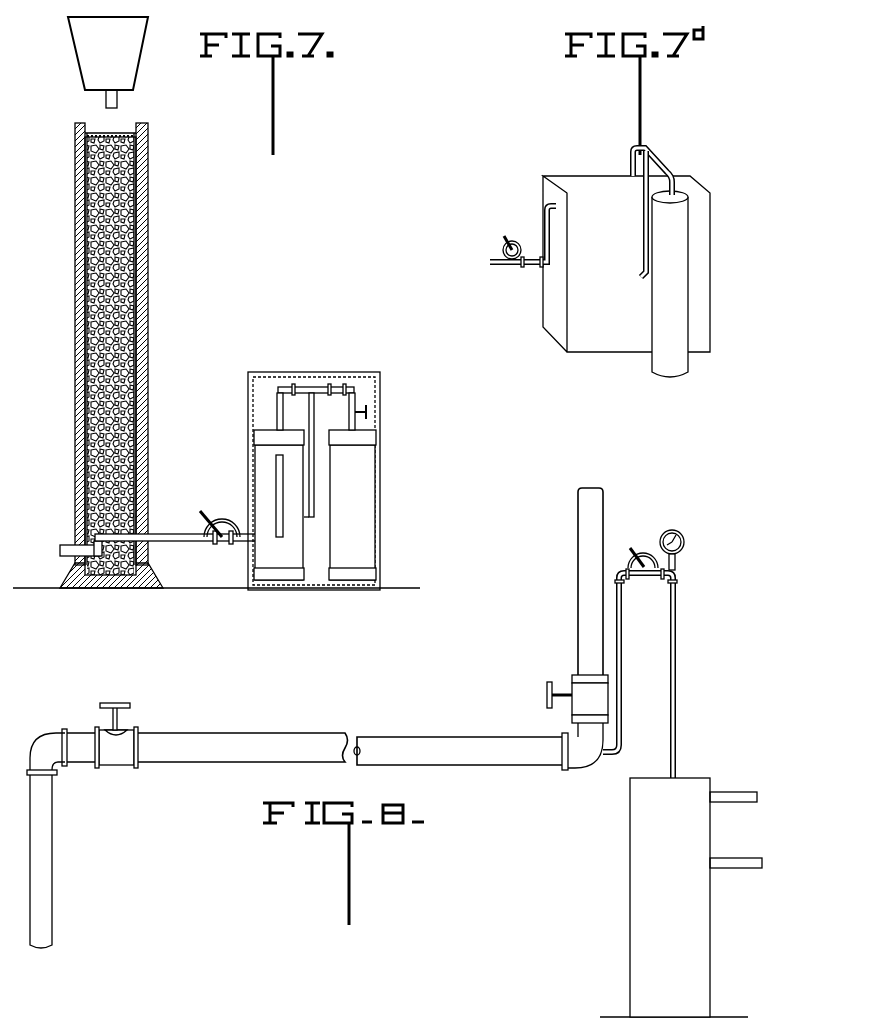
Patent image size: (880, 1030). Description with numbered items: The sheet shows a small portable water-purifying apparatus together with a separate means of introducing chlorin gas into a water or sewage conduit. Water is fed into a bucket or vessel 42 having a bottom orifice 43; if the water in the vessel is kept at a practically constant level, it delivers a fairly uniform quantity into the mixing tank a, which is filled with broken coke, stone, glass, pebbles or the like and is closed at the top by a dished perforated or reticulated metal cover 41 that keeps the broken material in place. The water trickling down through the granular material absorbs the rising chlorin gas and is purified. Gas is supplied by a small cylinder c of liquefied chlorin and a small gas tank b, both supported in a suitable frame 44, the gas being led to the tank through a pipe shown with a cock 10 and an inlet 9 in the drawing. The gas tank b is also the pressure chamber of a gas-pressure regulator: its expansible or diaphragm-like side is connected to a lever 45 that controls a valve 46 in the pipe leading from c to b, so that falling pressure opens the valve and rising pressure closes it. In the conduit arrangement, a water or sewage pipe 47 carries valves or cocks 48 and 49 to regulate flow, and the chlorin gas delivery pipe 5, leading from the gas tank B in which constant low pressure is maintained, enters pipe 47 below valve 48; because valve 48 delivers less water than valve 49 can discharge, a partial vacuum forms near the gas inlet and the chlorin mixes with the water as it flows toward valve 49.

In FIG. 7, the bucket or vessel 42 is at (108, 53).
In FIG. 7, the bottom orifice 43 is at (118, 98).
In FIG. 7, the perforated or reticulated metal cover 41 is at (131, 137).
In FIG. 7, the mixing tank a is at (148, 297).
In FIG. 7, the inlet pipe 9 is at (64, 551).
In FIG. 7, the chlorin gas delivery pipe 5 is at (160, 541).
In FIG. 7A, the chlorin gas delivery pipe 5 is at (530, 268).
In FIG. 8, the chlorin gas delivery pipe 5 is at (676, 662).
In FIG. 7, the valve 10 is at (220, 538).
In FIG. 7A, the valve 10 is at (513, 242).
In FIG. 7, the frame 44 is at (381, 424).
In FIG. 7, the gas tank b is at (279, 505).
In FIG. 7A, the gas tank b is at (626, 264).
In FIG. 7, the cylinder of liquefied chlorin c is at (352, 505).
In FIG. 7A, the cylinder of liquefied chlorin c is at (670, 284).
In FIG. 7, the valve 46 is at (318, 386).
In FIG. 7A, the valve 46 is at (652, 162).
In FIG. 7, the lever 45 is at (314, 402).
In FIG. 7A, the lever 45 is at (629, 214).
In FIG. 8, the valve 48 is at (597, 689).
In FIG. 8, the water or sewage pipe 47 is at (437, 752).
In FIG. 8, the valve 49 is at (121, 768).
In FIG. 8, the gas tank B is at (696, 897).